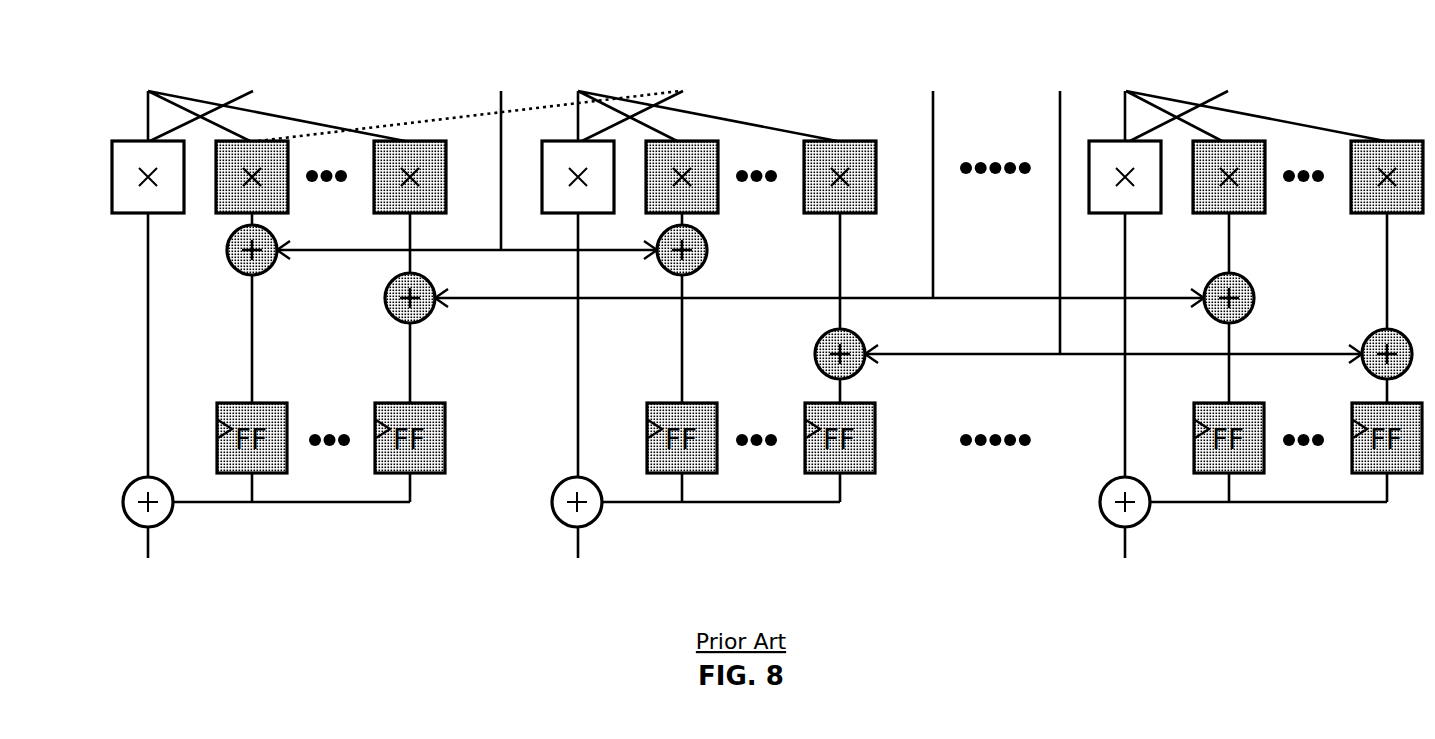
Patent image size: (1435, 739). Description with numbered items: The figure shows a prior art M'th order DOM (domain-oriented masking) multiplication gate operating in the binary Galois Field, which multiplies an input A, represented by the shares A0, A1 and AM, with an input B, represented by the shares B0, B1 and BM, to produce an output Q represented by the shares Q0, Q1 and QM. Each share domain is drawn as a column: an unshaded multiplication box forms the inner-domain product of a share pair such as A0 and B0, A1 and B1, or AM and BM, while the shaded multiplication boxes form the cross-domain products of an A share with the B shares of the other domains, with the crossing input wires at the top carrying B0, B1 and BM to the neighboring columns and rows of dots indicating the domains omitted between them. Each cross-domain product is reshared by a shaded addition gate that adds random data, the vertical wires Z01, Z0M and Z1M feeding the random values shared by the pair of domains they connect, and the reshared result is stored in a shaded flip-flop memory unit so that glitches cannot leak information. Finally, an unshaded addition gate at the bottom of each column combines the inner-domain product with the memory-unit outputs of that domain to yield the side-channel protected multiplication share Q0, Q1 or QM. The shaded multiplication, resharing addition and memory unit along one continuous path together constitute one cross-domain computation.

The input data share A0 is at (268, 97).
The input data share B0 is at (208, 97).
The random data Z01 is at (505, 152).
The input data share A1 is at (700, 97).
The input data share B1 is at (640, 97).
The random data Z0M is at (939, 176).
The random data Z1M is at (1065, 204).
The input data share AM is at (1247, 97).
The input data share BM is at (1189, 97).
The output data share Q0 is at (148, 540).
The output data share Q1 is at (577, 540).
The output data share QM is at (1125, 540).